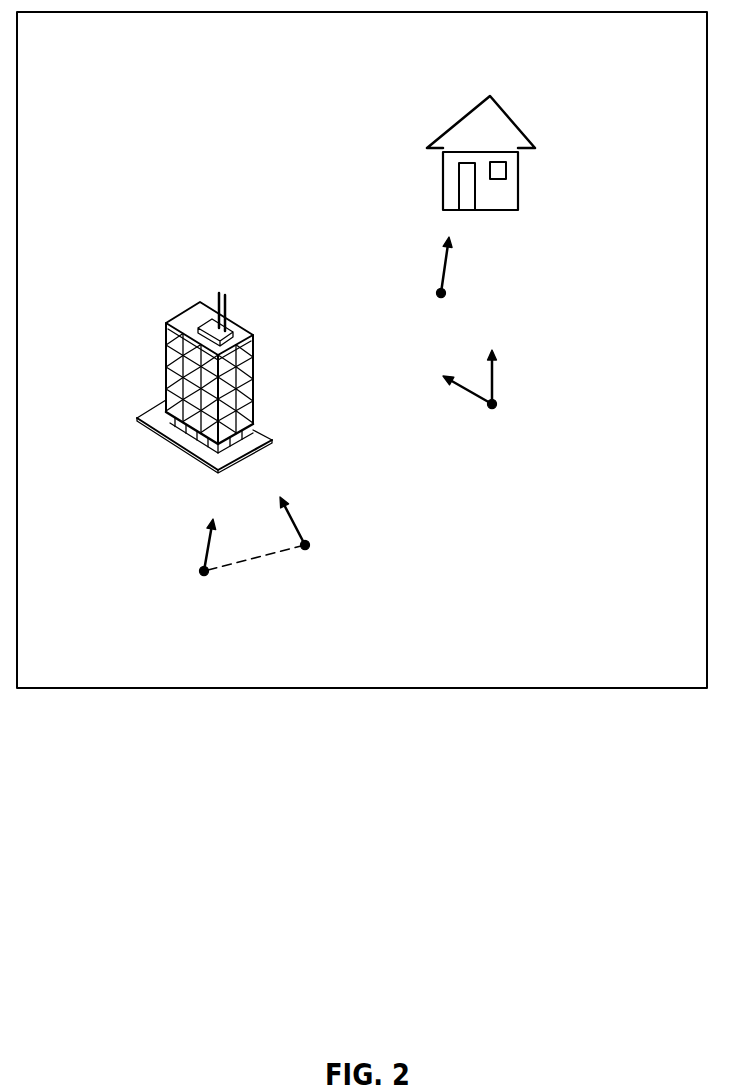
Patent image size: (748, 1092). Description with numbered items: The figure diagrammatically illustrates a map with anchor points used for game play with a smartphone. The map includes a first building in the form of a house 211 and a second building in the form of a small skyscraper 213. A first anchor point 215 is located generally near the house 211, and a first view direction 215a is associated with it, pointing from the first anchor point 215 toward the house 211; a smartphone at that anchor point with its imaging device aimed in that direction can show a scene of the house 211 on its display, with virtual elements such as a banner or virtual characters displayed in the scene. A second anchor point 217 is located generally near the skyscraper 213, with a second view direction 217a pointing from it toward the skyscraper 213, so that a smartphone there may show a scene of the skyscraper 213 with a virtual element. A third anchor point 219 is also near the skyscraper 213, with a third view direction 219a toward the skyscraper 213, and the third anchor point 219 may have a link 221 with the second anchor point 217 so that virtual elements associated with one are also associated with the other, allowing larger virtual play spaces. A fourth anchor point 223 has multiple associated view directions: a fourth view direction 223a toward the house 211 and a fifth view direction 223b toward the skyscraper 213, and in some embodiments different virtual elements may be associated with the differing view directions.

The house 211 is at (522, 130).
The small skyscraper 213 is at (167, 337).
The first anchor point 215 is at (437, 297).
The first view direction 215a is at (445, 273).
The second anchor point 217 is at (203, 578).
The second view direction 217a is at (207, 545).
The third anchor point 219 is at (312, 552).
The third view direction 219a is at (297, 520).
The link 221 is at (255, 557).
The fourth anchor point 223 is at (493, 412).
The fourth view direction 223a is at (493, 383).
The fifth view direction 223b is at (468, 398).